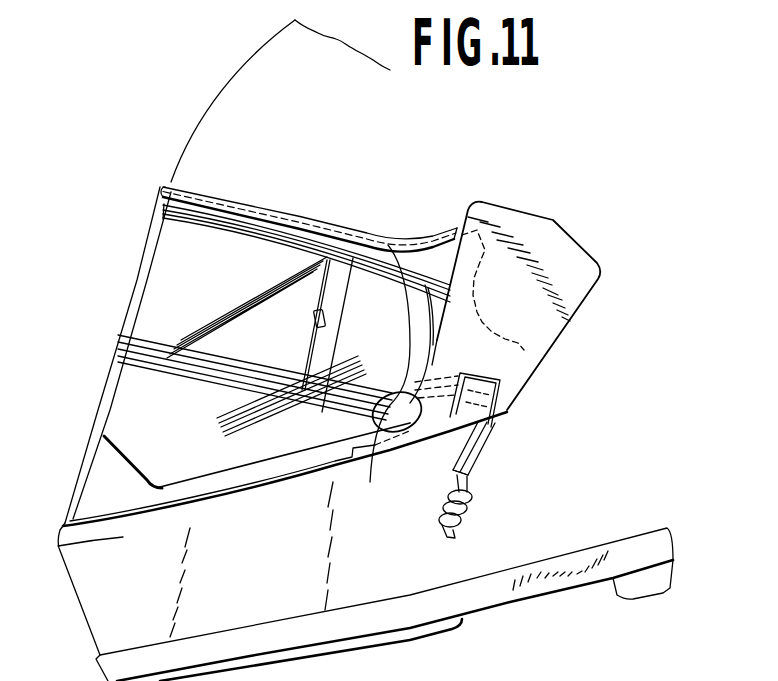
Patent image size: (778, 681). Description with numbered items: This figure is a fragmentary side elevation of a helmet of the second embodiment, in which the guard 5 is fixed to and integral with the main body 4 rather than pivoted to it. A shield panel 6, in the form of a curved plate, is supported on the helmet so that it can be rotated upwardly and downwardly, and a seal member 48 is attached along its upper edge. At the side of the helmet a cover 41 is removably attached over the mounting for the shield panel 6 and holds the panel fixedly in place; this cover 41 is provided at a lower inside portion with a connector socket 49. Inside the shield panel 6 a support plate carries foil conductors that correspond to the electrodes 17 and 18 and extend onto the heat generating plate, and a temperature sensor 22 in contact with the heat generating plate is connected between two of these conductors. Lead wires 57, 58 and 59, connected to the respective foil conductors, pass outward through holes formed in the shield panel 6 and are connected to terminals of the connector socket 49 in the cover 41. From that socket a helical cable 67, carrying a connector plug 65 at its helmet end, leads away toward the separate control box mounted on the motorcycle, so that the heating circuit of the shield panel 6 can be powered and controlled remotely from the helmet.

The main body 4 is at (228, 80).
The guard 5 is at (435, 578).
The shield panel 6 is at (97, 433).
The electrode 17 is at (233, 237).
The electrode 18 is at (146, 352).
The temperature sensor 22 is at (315, 318).
The cover 41 is at (573, 288).
The seal member 48 is at (313, 222).
The connector socket 49 is at (500, 414).
The lead wire 57 is at (427, 333).
The lead wire 58 is at (381, 377).
The lead wire 59 is at (410, 413).
The connector plug 65 is at (475, 455).
The helical cable 67 is at (467, 510).